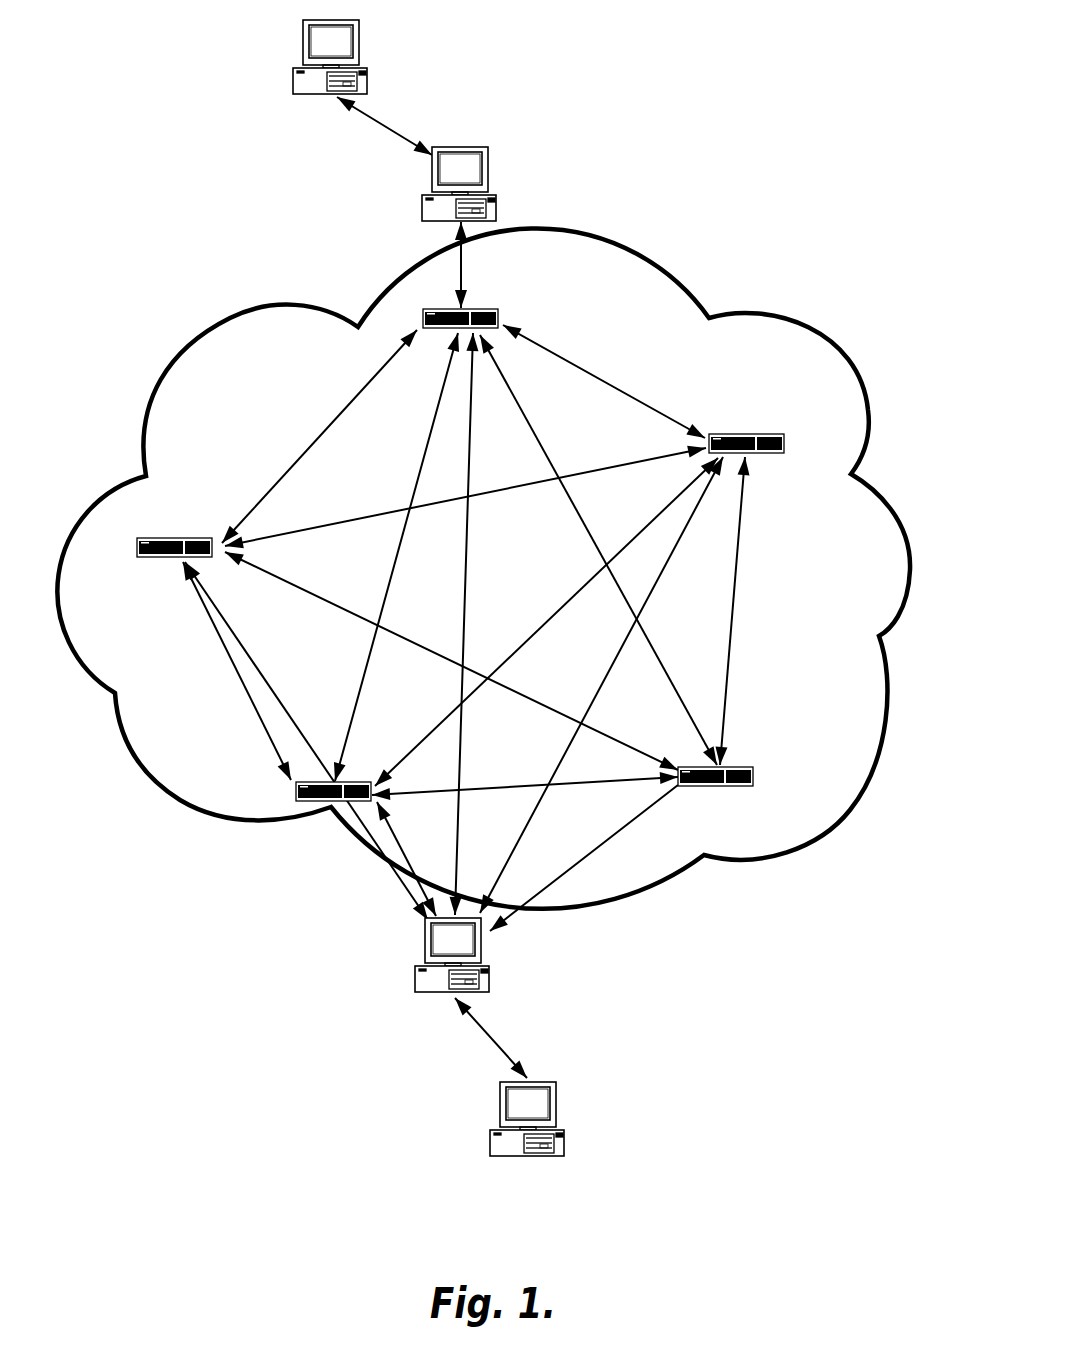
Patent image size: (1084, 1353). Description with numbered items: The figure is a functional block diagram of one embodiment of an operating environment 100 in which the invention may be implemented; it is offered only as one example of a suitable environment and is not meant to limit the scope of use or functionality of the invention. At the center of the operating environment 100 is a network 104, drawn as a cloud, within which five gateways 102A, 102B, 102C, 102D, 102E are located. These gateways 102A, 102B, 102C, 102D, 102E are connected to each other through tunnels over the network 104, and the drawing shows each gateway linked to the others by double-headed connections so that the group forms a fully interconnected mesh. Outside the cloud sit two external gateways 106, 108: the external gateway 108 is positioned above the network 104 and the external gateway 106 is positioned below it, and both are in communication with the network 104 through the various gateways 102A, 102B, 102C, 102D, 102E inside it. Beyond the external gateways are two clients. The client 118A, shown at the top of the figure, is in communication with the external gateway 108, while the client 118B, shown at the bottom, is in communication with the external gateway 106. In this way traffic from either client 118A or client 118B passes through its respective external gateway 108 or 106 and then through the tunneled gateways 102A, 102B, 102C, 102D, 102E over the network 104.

The operating environment 100 is at (196, 126).
The gateway 102A is at (477, 308).
The gateway 102B is at (778, 433).
The gateway 102C is at (740, 767).
The gateway 102D is at (348, 780).
The gateway 102E is at (192, 537).
The network 104 is at (640, 237).
The external gateway 106 is at (485, 950).
The external gateway 108 is at (490, 165).
The client 118A is at (362, 43).
The client 118B is at (557, 1085).